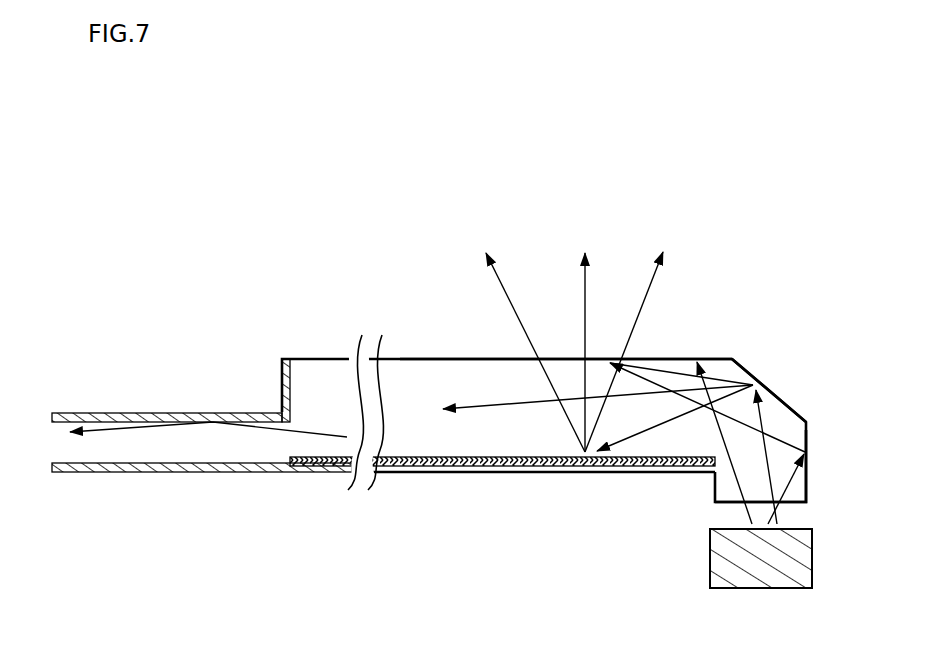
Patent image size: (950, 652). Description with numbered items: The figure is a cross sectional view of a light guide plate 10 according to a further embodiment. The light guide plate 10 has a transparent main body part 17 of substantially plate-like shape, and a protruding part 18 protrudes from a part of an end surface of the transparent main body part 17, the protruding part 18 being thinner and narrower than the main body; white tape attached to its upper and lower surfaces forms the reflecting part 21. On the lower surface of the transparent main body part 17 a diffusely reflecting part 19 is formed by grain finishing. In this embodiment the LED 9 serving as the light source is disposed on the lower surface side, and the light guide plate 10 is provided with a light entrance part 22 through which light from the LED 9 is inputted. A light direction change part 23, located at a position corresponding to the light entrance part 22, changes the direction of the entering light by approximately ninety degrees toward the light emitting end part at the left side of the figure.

The LED 9 is at (814, 555).
The light guide plate 10 is at (306, 345).
The transparent main body part 17 is at (688, 358).
The protruding part 18 is at (48, 442).
The diffusely reflecting part 19 is at (423, 457).
The reflecting part 21 is at (167, 413).
The light entrance part 22 is at (809, 480).
The light direction change part 23 is at (766, 387).